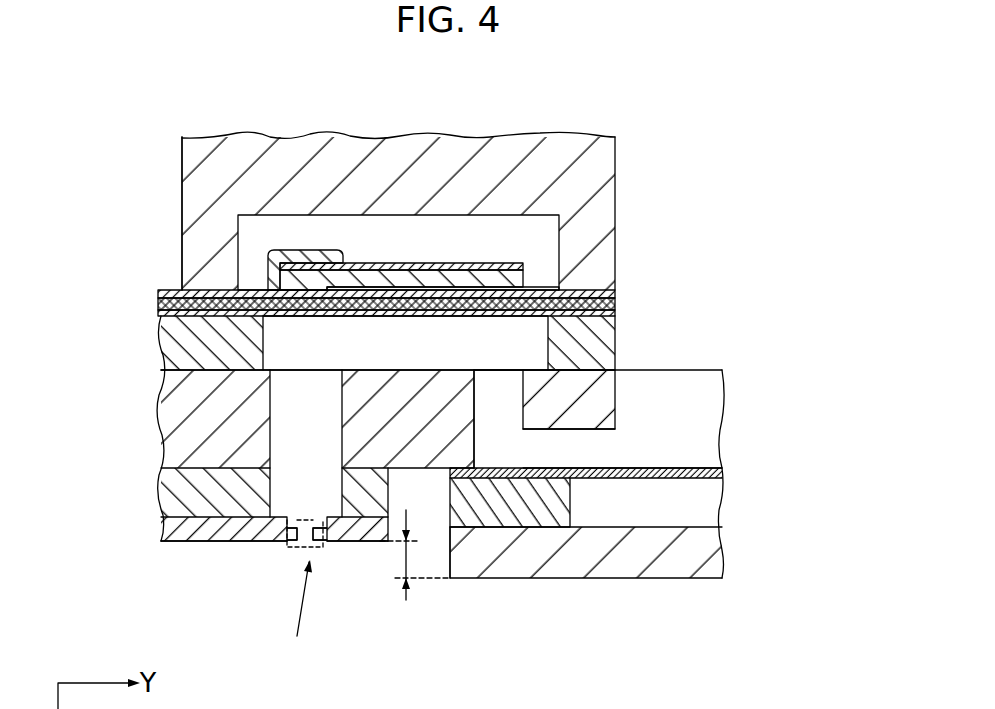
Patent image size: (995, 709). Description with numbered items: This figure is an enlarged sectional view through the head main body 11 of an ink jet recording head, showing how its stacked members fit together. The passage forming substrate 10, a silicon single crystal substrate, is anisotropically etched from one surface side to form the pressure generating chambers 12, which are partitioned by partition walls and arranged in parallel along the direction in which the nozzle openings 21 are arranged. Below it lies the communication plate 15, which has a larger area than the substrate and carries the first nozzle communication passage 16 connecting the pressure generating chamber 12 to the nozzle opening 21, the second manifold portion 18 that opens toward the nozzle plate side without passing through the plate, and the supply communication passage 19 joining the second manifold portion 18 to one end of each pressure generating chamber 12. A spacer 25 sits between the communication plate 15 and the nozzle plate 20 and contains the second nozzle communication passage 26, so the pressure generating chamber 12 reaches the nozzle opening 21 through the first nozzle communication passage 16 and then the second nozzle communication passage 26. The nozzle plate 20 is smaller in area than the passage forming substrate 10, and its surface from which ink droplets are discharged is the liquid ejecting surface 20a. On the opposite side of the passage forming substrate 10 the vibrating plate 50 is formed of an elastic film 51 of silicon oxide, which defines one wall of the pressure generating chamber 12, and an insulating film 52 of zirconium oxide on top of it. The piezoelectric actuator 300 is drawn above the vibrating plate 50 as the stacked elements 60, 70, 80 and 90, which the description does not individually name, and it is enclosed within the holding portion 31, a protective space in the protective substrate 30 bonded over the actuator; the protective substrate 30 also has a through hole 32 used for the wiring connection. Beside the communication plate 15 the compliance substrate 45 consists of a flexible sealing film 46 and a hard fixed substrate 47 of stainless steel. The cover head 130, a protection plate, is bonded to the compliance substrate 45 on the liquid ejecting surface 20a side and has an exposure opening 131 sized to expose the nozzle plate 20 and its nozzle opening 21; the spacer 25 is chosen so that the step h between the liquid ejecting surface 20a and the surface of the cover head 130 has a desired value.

The head main body 11 is at (748, 309).
The passage forming substrate 10 is at (173, 339).
The pressure generating chamber 12 is at (486, 353).
The communication plate 15 is at (172, 418).
The first nozzle communication passage 16 is at (307, 440).
The second manifold portion 18 is at (533, 430).
The supply communication passage 19 is at (522, 410).
The nozzle plate 20 is at (173, 527).
The liquid ejecting surface 20a is at (178, 556).
The nozzle opening 21 is at (304, 540).
The spacer 25 is at (168, 488).
The second nozzle communication passage 26 is at (285, 522).
The protective substrate 30 is at (192, 206).
The holding portion 31 is at (515, 233).
The through hole 32 is at (197, 160).
The compliance substrate 45 is at (773, 450).
The sealing film 46 is at (716, 472).
The fixed substrate 47 is at (560, 495).
The vibrating plate 50 is at (676, 273).
The elastic film 51 is at (616, 312).
The insulating film 52 is at (616, 296).
The first electrode 60 is at (430, 287).
The piezoelectric layer 70 is at (387, 277).
The second electrode 80 is at (355, 267).
The lead electrode 90 is at (303, 253).
The cover head 130 is at (680, 563).
The exposure opening 131 is at (441, 548).
The piezoelectric actuator 300 is at (461, 240).